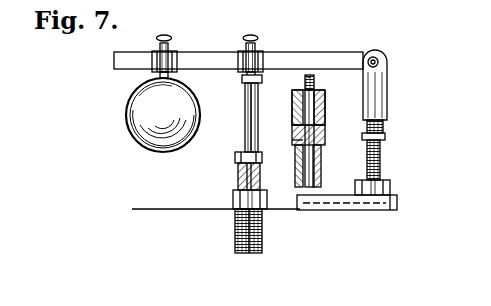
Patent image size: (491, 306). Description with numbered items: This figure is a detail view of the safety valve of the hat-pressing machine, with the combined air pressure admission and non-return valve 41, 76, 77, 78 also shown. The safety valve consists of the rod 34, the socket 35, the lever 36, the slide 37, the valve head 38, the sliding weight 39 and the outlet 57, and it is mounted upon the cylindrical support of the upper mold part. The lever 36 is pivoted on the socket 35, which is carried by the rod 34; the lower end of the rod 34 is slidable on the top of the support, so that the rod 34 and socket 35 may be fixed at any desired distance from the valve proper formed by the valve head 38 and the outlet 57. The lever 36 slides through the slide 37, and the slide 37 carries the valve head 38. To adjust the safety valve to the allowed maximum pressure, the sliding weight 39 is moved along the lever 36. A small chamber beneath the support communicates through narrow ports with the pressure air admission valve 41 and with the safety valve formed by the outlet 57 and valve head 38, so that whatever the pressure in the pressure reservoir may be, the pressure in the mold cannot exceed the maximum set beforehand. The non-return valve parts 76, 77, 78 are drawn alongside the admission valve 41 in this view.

The rod 34 is at (381, 164).
The socket 35 is at (387, 88).
The lever 36 is at (117, 57).
The slide 37 is at (257, 72).
The valve head 38 is at (262, 159).
The sliding weight 39 is at (196, 119).
The air pressure admission valve 41 is at (325, 113).
The outlet 57 is at (232, 199).
The combined air pressure admission and non-return valve 76 is at (308, 90).
The combined air pressure admission and non-return valve 77 is at (314, 84).
The combined air pressure admission and non-return valve 78 is at (314, 141).